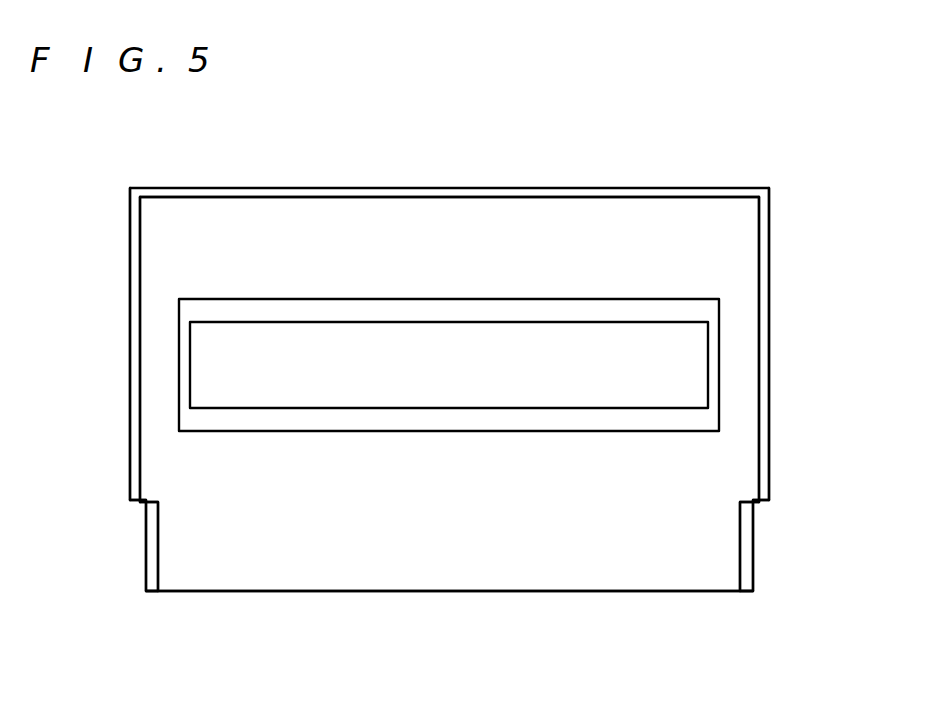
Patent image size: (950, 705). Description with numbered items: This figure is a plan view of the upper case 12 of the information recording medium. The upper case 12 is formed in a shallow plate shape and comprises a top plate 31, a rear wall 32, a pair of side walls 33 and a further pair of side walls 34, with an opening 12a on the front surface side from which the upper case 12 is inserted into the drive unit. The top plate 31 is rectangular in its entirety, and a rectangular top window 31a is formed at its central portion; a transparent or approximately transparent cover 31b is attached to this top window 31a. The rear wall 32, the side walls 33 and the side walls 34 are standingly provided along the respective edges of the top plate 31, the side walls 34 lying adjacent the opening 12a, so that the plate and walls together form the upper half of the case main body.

The upper case 12 is at (298, 137).
The opening 12a is at (489, 597).
The top plate 31 is at (573, 238).
The top window 31a is at (625, 342).
The cover 31b is at (493, 308).
The rear wall 32 is at (418, 197).
The side walls 33 is at (133, 333).
The side walls 34 is at (148, 542).